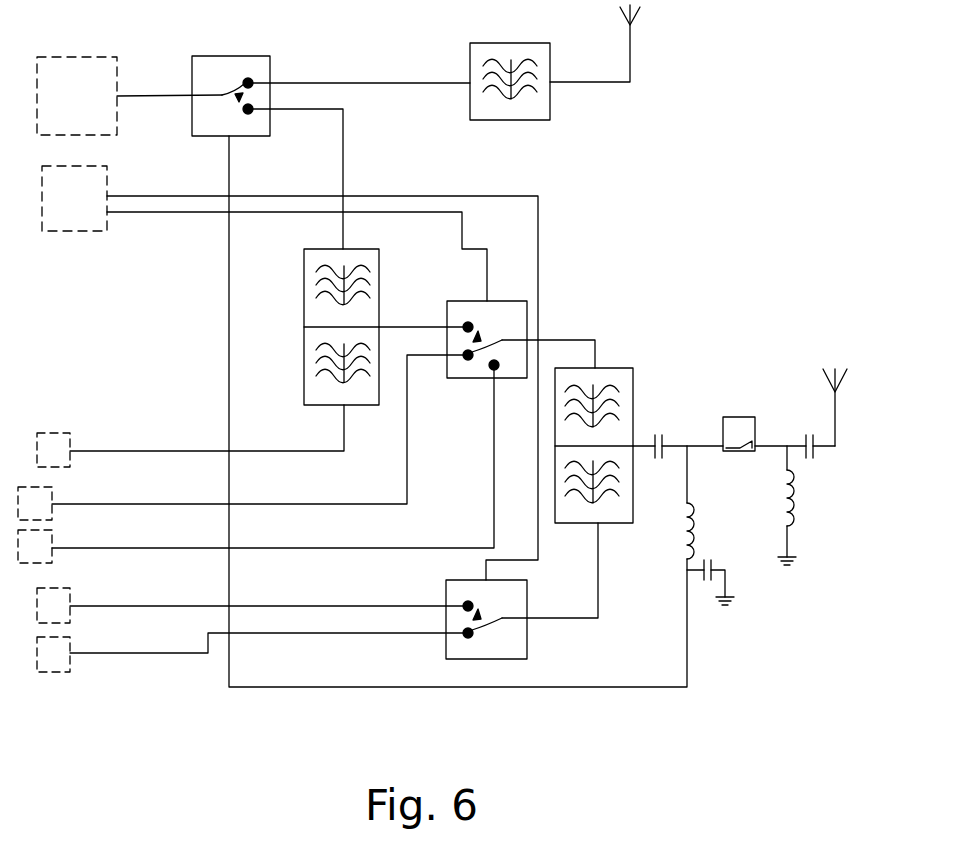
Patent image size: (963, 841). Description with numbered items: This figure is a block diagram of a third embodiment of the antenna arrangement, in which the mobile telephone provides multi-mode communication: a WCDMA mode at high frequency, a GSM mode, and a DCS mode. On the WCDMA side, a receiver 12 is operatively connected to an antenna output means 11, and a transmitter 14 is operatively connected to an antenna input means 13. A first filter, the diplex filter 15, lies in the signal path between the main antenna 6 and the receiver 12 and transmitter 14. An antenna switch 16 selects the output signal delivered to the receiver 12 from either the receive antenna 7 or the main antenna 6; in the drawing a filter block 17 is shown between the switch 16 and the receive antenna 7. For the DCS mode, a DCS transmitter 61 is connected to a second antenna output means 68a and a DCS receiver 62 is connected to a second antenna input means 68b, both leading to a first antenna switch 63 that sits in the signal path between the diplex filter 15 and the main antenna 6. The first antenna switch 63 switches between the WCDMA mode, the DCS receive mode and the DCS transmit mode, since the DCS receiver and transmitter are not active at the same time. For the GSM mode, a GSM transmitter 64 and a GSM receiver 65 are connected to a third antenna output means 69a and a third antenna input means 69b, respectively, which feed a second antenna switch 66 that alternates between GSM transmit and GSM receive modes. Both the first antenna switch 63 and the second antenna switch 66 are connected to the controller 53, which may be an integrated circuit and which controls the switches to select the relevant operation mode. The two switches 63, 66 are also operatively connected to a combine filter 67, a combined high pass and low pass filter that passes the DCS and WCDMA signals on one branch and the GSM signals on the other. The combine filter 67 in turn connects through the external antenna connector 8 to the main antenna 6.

The receiver 12 is at (93, 55).
The antenna output means 11 is at (182, 95).
The antenna switch 16 is at (232, 55).
The filter 17 is at (513, 43).
The receive antenna 7 is at (637, 14).
The controller 53 is at (78, 231).
The diplex filter 15 is at (304, 327).
The first antenna switch 63 is at (530, 307).
The combine filter 67 is at (633, 446).
The external antenna connector 8 is at (740, 417).
The main antenna 6 is at (847, 380).
The transmitter 14 is at (60, 433).
The antenna input means 13 is at (200, 450).
The DCS transmitter 61 is at (53, 492).
The second antenna output means 68a is at (210, 503).
The DCS receiver 62 is at (53, 535).
The second antenna input means 68b is at (213, 548).
The GSM transmitter 64 is at (70, 591).
The third antenna output means 69a is at (218, 605).
The GSM receiver 65 is at (70, 643).
The third antenna input means 69b is at (213, 633).
The second antenna switch 66 is at (527, 632).